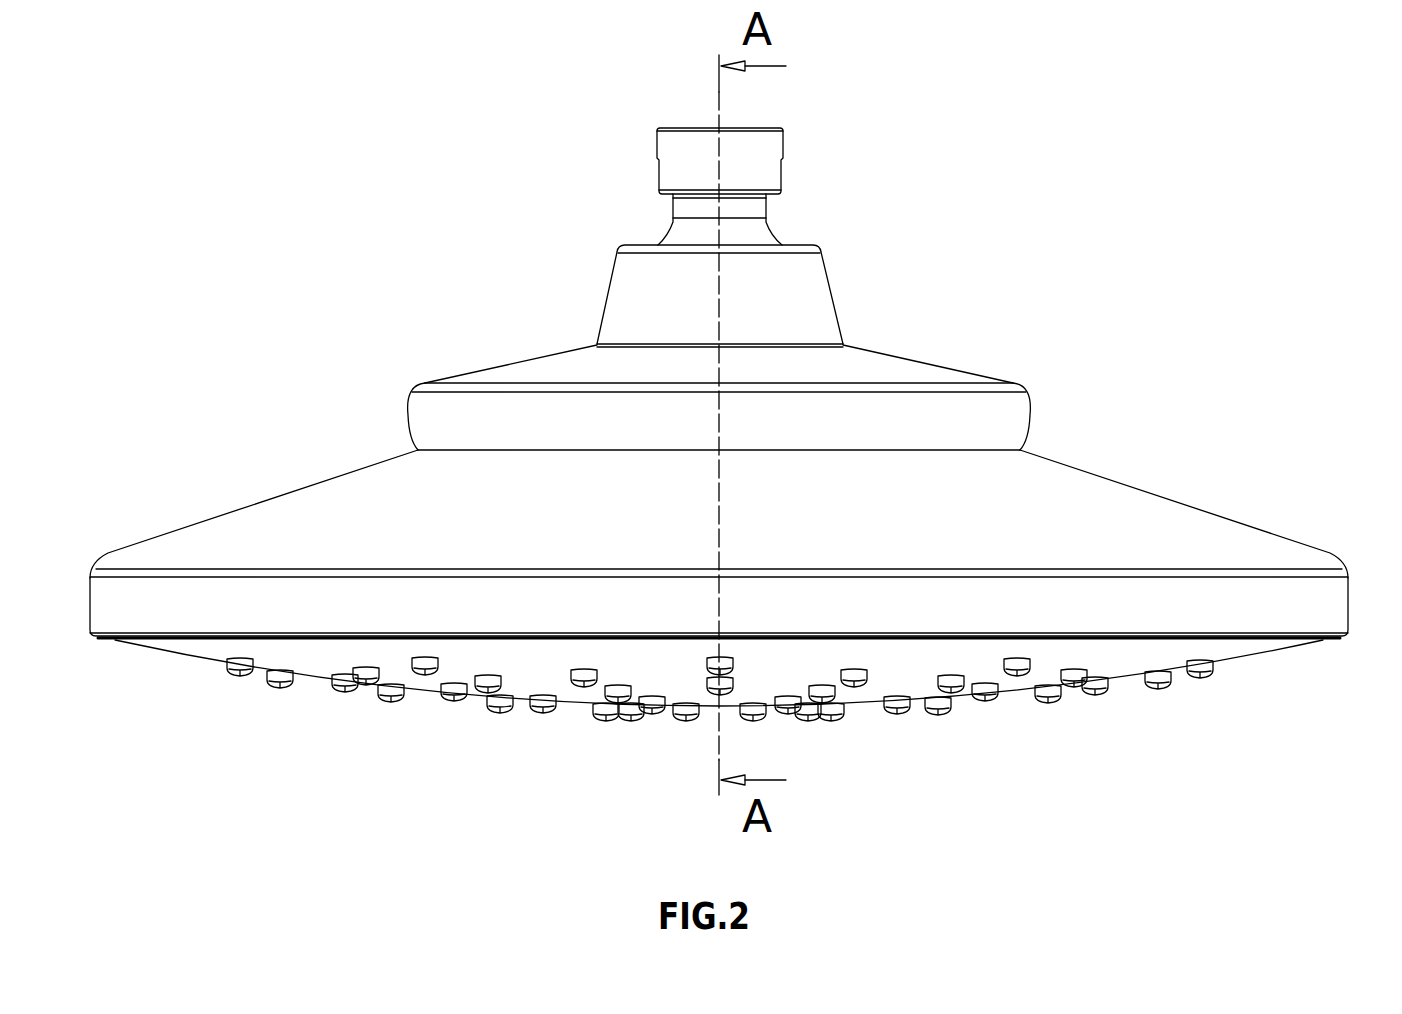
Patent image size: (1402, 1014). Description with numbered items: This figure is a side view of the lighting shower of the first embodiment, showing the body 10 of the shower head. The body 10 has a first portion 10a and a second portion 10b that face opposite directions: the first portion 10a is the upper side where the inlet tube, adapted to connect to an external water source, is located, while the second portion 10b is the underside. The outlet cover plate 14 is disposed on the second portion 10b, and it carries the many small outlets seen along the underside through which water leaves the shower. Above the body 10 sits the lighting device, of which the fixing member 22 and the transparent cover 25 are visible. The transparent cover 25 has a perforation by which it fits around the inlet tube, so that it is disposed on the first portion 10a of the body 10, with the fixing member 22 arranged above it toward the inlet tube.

The body 10 is at (740, 562).
The first portion 10a is at (1140, 523).
The second portion 10b is at (1252, 640).
The outlet cover plate 14 is at (1118, 660).
The fixing member 22 is at (813, 295).
The transparent cover 25 is at (900, 375).